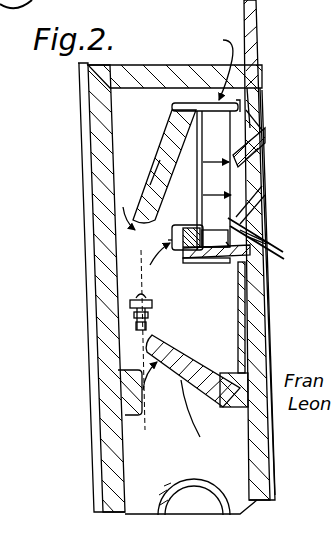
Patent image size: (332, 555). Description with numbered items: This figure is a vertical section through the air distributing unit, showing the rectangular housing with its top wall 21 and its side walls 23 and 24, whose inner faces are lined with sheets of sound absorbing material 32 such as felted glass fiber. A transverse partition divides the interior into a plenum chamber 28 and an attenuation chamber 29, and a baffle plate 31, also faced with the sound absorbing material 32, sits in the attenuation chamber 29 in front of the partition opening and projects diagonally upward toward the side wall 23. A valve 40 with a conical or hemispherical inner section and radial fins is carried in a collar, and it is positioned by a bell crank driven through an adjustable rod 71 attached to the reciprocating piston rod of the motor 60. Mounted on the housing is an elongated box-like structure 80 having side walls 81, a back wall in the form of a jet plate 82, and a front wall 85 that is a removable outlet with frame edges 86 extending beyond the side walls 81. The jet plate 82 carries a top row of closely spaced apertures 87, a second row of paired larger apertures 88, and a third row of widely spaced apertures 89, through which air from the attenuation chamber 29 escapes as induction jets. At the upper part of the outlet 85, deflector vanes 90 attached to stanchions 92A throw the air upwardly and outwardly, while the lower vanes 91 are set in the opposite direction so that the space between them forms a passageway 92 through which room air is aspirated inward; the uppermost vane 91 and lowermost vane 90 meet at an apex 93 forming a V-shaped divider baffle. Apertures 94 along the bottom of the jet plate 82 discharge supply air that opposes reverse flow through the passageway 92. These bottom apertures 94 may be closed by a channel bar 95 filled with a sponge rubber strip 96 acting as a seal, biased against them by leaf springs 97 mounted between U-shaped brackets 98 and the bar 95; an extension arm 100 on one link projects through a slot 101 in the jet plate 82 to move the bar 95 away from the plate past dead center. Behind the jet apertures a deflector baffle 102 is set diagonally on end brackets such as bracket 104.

The top wall 21 is at (152, 63).
The side wall 23 is at (262, 360).
The side wall 24 is at (98, 322).
The plenum chamber 28 is at (164, 480).
The attenuation chamber 29 is at (218, 300).
The baffle plate 31 is at (215, 380).
The sound absorbing material 32 is at (247, 325).
The valve 40 is at (167, 500).
The motor 60 is at (140, 300).
The adjustable rod 71 is at (103, 374).
The box-like structure 80 is at (218, 66).
The side walls 81 is at (206, 103).
The jet plate 82 is at (198, 186).
The front wall 85 is at (266, 154).
The frame edges 86 is at (256, 75).
The apertures 87 is at (197, 160).
The apertures 88 is at (217, 155).
The apertures 89 is at (217, 184).
The deflector vanes 90 is at (263, 130).
The vanes 91 is at (263, 238).
The passageway 92 is at (283, 255).
The stanchions 92A is at (263, 110).
The apex 93 is at (246, 216).
The apertures 94 is at (223, 230).
The channel bar 95 is at (176, 264).
The sponge rubber strip 96 is at (205, 259).
The leaf springs 97 is at (189, 226).
The U-shaped brackets 98 is at (178, 252).
The extension arm 100 is at (268, 244).
The slot 101 is at (220, 240).
The deflector baffle 102 is at (153, 170).
The bracket 104 is at (170, 123).